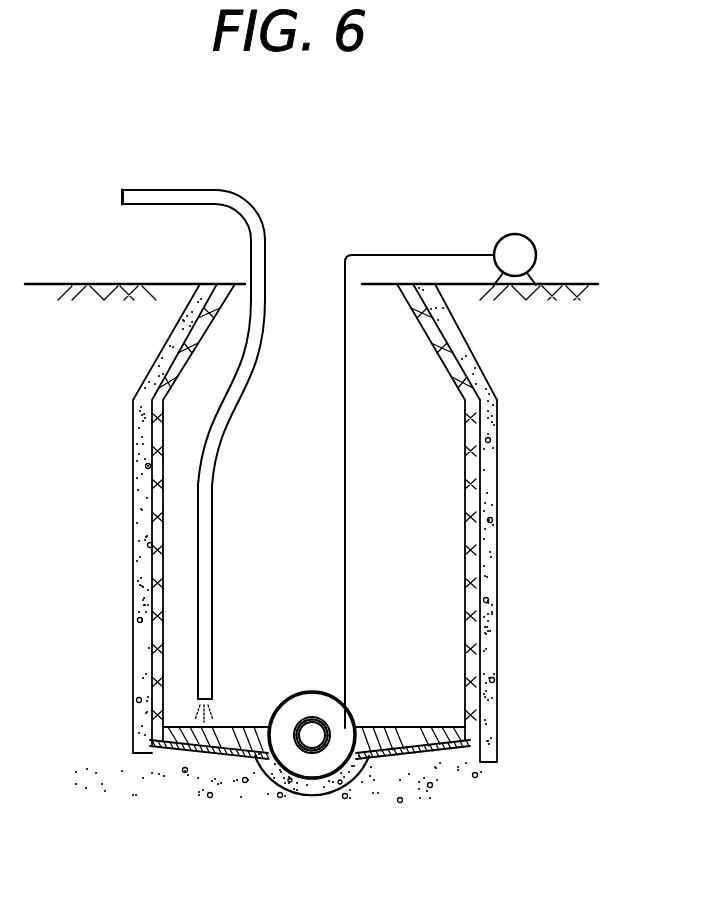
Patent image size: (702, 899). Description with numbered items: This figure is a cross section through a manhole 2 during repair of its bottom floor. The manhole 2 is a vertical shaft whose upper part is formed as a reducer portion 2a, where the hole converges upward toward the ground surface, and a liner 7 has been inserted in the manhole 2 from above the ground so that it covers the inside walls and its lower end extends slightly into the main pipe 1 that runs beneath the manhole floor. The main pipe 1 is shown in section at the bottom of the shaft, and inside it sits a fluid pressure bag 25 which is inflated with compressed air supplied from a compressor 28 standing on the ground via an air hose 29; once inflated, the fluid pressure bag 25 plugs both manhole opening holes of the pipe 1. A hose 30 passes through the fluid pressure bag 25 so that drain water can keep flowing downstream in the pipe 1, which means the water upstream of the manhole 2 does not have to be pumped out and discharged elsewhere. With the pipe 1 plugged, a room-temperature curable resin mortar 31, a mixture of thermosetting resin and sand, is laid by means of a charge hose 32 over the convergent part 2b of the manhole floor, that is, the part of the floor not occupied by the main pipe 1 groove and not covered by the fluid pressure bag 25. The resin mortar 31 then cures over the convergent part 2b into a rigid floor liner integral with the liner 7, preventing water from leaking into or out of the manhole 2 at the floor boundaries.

The main pipe 1 is at (315, 790).
The manhole 2 is at (490, 606).
The reducer portion 2a is at (478, 362).
The convergent part 2b is at (422, 740).
The liner 7 is at (476, 565).
The fluid pressure bag 25 is at (306, 692).
The compressor 28 is at (513, 233).
The air hose 29 is at (345, 520).
The hose 30 is at (330, 722).
The resin mortar 31 is at (232, 725).
The charge hose 32 is at (213, 543).